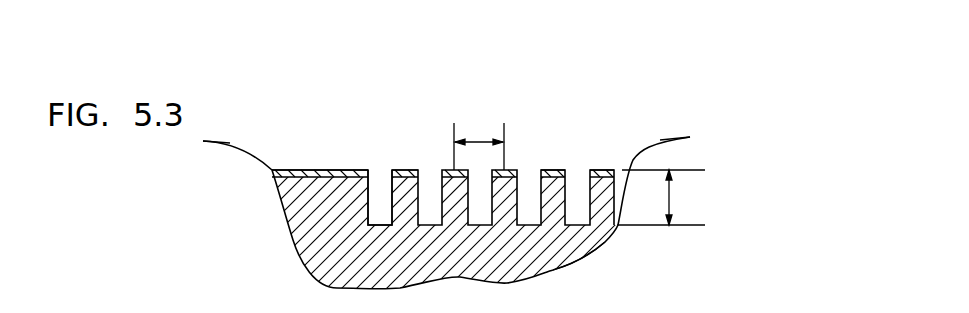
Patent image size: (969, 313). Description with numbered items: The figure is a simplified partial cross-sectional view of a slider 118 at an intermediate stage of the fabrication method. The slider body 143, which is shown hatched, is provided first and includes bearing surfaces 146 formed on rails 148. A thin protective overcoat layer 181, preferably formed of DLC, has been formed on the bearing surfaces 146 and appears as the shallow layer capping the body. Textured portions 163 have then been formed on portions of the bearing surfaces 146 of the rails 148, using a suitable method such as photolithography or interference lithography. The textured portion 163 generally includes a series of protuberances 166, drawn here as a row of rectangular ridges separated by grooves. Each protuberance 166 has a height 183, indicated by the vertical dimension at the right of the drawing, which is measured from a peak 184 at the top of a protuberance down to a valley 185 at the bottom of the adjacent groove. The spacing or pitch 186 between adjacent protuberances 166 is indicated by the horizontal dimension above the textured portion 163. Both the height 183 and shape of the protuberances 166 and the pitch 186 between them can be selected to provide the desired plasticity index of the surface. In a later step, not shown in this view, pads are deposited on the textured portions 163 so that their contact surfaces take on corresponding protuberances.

The slider 118 is at (632, 75).
The textured portion 163 is at (532, 145).
The protuberances 166 is at (548, 170).
The protective overcoat layer 181 is at (288, 172).
The bearing surfaces 146 is at (327, 172).
The valley 185 is at (377, 222).
The peak 184 is at (402, 172).
The pitch 186 is at (478, 142).
The height 183 is at (669, 198).
The rails 148 is at (302, 226).
The slider body 143 is at (585, 249).